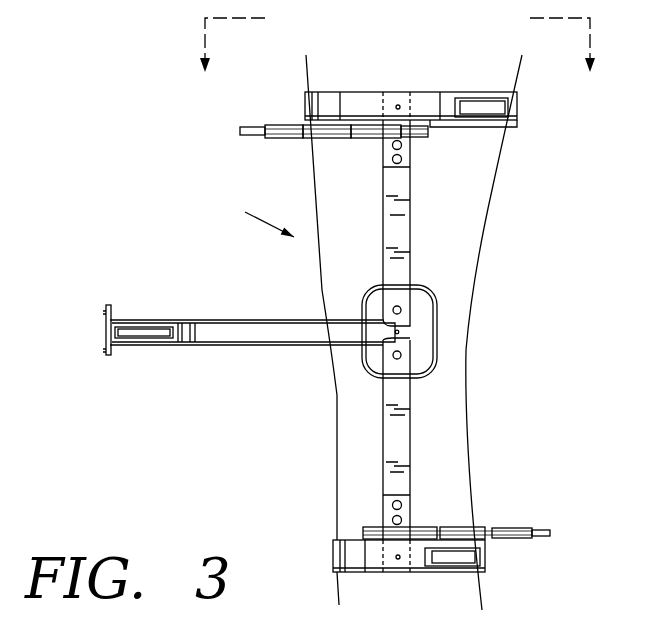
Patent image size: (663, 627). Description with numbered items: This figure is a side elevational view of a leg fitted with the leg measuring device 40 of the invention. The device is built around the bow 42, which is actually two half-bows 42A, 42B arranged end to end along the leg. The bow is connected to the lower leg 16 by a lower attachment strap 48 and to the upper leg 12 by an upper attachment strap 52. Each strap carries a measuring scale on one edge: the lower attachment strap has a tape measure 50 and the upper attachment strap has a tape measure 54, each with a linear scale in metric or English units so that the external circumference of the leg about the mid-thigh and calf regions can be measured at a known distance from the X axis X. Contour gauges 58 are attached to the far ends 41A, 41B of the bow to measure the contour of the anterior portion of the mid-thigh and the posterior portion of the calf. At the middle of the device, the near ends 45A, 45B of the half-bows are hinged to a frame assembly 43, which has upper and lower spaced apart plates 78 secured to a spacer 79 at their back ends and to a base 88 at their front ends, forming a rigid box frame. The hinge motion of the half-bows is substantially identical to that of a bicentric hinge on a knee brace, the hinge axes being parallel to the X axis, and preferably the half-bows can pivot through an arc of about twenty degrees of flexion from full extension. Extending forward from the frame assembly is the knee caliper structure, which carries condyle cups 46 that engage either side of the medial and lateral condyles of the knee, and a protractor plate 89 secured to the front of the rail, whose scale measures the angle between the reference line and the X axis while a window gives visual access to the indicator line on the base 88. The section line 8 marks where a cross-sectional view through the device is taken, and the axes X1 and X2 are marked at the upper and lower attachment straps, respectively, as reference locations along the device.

The section line 8 is at (397, 63).
The upper leg 12 is at (492, 191).
The lower leg 16 is at (336, 490).
The leg measuring device 40 is at (253, 215).
The far end of half-bow 41A is at (411, 508).
The far end of half-bow 41B is at (383, 153).
The bow 42 is at (397, 330).
The half-bow 42A is at (410, 412).
The half-bow 42B is at (410, 255).
The frame assembly 43 is at (235, 340).
The near end of half-bow 45A is at (375, 350).
The near end of half-bow 45B is at (411, 306).
The condyle cups 46 is at (398, 361).
The lower attachment strap 48 is at (472, 572).
The tape measure 50 is at (409, 552).
The upper attachment strap 52 is at (431, 113).
The tape measure 54 is at (492, 124).
The contour gauges 58 is at (278, 139).
The spaced apart plates 78 is at (164, 320).
The spacer 79 is at (412, 338).
The base 88 is at (127, 336).
The protractor plate 89 is at (107, 357).
The X axis X is at (394, 331).
The lower axis X1 is at (398, 560).
The upper axis X2 is at (398, 104).